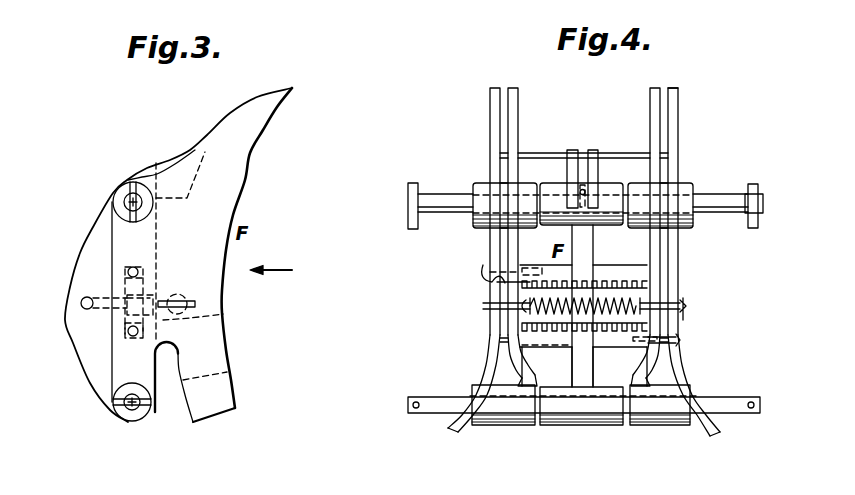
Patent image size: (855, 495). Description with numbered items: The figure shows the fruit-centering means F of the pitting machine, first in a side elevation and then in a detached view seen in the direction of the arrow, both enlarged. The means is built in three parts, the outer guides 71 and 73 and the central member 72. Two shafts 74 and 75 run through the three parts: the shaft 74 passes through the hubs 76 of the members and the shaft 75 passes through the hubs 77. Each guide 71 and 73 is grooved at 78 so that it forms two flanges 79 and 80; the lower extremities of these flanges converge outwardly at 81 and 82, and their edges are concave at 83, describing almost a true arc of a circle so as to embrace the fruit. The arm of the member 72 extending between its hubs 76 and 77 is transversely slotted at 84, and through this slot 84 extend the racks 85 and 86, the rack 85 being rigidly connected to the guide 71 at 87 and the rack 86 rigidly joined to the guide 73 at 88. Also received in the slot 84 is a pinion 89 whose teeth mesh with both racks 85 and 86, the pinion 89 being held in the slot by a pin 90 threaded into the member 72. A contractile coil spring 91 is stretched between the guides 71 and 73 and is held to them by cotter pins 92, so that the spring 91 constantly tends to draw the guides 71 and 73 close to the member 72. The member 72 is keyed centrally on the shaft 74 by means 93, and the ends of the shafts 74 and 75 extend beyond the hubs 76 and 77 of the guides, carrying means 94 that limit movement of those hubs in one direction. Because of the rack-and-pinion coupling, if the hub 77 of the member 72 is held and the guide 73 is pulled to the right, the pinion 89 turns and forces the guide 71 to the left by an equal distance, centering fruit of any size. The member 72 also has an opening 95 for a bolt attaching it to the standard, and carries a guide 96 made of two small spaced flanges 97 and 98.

In FIG. 3, the guide 71 is at (213, 343).
In FIG. 4, the guide 71 is at (519, 120).
In FIG. 4, the member 72 is at (579, 230).
In FIG. 4, the guide 73 is at (680, 118).
In FIG. 3, the shaft 74 is at (122, 199).
In FIG. 4, the shaft 74 is at (446, 209).
In FIG. 3, the shaft 75 is at (141, 412).
In FIG. 4, the shaft 75 is at (434, 397).
In FIG. 3, the hub 76 is at (122, 183).
In FIG. 4, the hub 76 is at (553, 192).
In FIG. 3, the hub 77 is at (125, 418).
In FIG. 4, the hub 77 is at (511, 426).
In FIG. 4, the groove 78 is at (506, 167).
In FIG. 4, the flange 79 is at (519, 141).
In FIG. 4, the flange 80 is at (490, 143).
In FIG. 4, the converged lower extremity 81 is at (453, 436).
In FIG. 4, the converged lower extremity 82 is at (534, 380).
In FIG. 3, the concave edge 83 is at (248, 173).
In FIG. 4, the concave edge 83 is at (495, 282).
In FIG. 3, the transverse slot 84 is at (128, 272).
In FIG. 4, the rack 85 is at (543, 266).
In FIG. 4, the rack 86 is at (607, 345).
In FIG. 4, the rack connection 87 is at (486, 271).
In FIG. 4, the rack connection 88 is at (678, 341).
In FIG. 3, the pinion 89 is at (224, 316).
In FIG. 4, the pinion 89 is at (598, 283).
In FIG. 3, the pin 90 is at (112, 308).
In FIG. 4, the coil spring 91 is at (632, 312).
In FIG. 4, the cotter pin 92 is at (481, 307).
In FIG. 4, the keying means 93 is at (583, 190).
In FIG. 4, the movement-limiting means 94 is at (410, 188).
In FIG. 3, the opening 95 is at (81, 305).
In FIG. 4, the guide 96 is at (573, 149).
In FIG. 3, the flange 97 is at (168, 163).
In FIG. 4, the flange 97 is at (566, 155).
In FIG. 4, the flange 98 is at (595, 150).